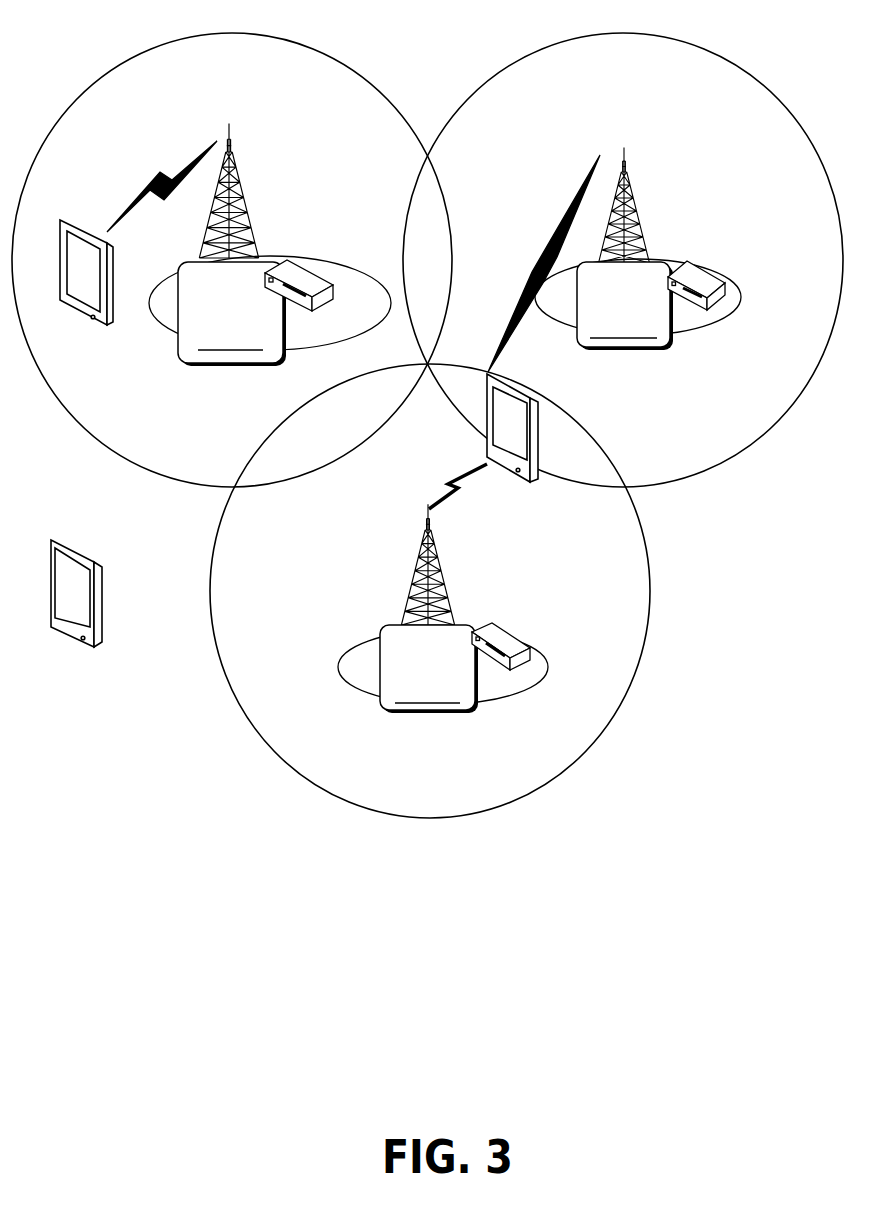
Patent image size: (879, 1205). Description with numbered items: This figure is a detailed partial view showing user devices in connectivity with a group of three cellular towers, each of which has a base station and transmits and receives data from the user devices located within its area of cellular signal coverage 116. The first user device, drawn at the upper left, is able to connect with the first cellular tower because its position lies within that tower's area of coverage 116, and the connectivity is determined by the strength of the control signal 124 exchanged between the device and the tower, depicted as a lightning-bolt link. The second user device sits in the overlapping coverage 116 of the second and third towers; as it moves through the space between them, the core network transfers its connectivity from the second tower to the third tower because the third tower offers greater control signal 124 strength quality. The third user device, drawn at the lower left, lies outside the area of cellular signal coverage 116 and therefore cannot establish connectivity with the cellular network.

The area of cellular signal coverage 116 is at (718, 52).
The control signal 124 is at (125, 203).